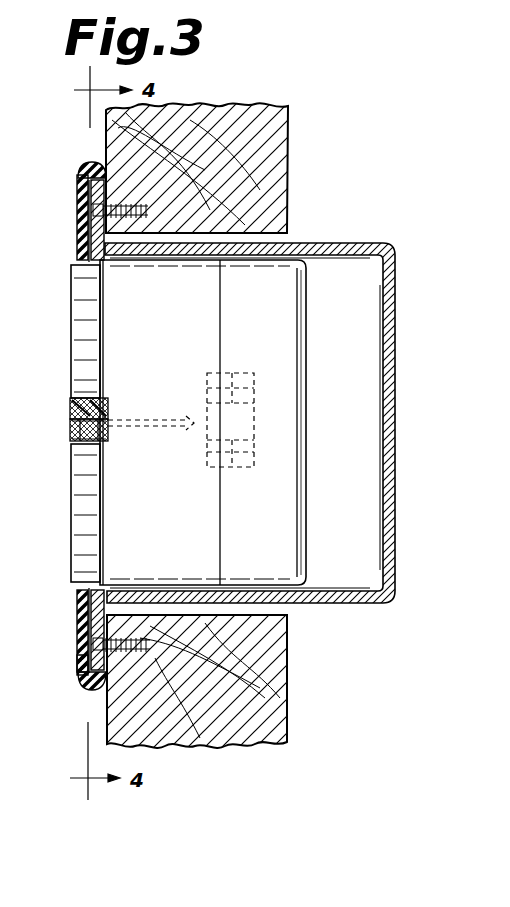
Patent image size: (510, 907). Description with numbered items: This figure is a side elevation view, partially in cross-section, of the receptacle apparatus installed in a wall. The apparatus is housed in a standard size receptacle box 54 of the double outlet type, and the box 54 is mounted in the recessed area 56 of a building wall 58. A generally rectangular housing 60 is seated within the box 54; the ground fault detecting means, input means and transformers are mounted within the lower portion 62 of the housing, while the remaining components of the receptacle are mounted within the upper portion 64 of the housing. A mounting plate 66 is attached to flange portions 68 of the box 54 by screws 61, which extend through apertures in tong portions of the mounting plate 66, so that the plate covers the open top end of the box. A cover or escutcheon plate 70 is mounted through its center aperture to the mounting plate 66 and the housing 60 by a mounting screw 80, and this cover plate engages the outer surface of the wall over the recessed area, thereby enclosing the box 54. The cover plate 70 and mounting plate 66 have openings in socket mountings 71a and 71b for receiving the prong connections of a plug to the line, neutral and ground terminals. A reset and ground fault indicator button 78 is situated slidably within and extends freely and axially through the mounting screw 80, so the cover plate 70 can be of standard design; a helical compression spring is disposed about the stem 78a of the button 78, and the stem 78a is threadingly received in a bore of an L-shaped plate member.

The receptacle box 54 is at (346, 243).
The recessed area 56 is at (282, 604).
The building wall 58 is at (276, 140).
The housing 60 is at (250, 404).
The screws 61 is at (96, 210).
The lower portion of the housing 62 is at (229, 422).
The upper portion of the housing 64 is at (208, 302).
The mounting plate 66 is at (78, 188).
The flange portions 68 is at (96, 168).
The cover plate 70 is at (80, 600).
The socket mounting 71a is at (80, 308).
The socket mounting 71b is at (80, 500).
The reset and ground fault indicator button 78 is at (61, 407).
The stem of button 78a is at (155, 420).
The mounting screw 80 is at (72, 404).